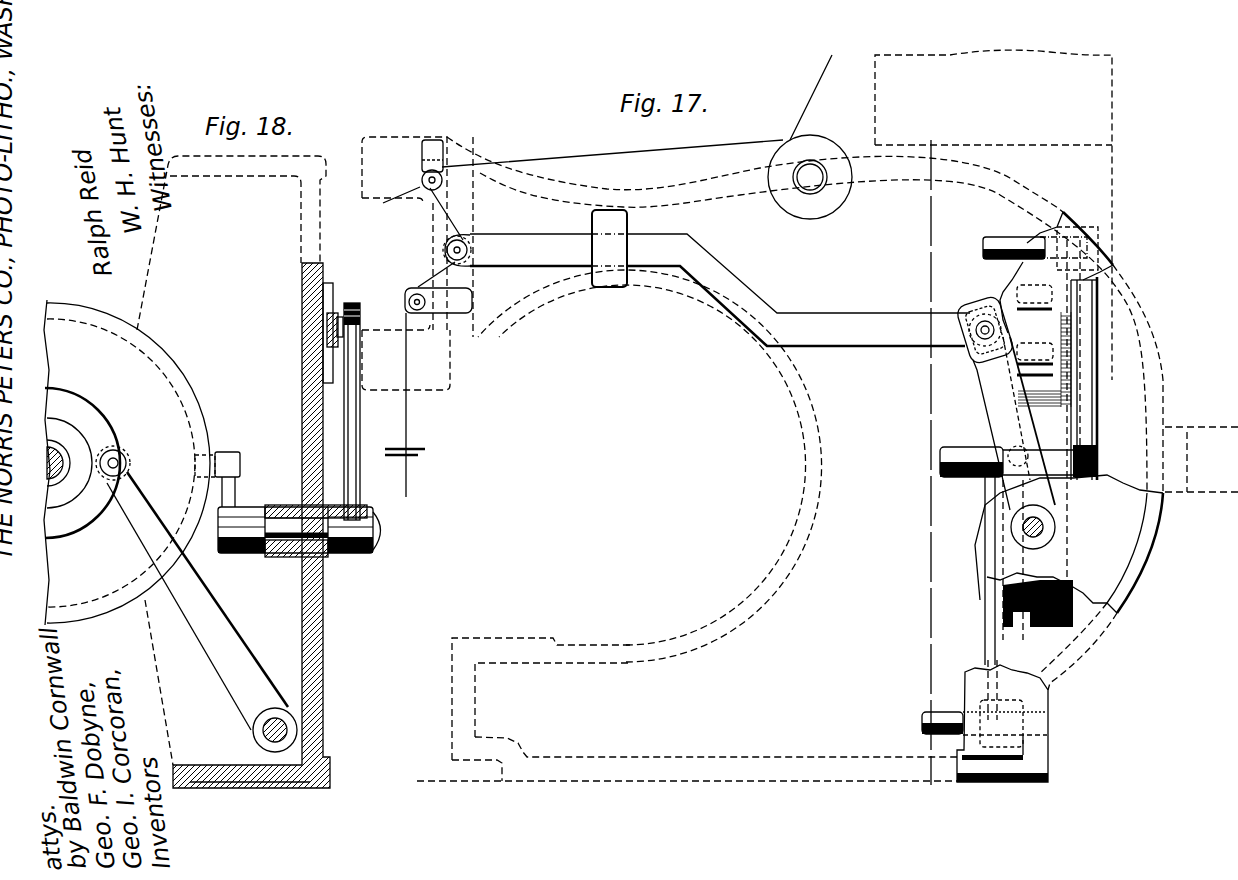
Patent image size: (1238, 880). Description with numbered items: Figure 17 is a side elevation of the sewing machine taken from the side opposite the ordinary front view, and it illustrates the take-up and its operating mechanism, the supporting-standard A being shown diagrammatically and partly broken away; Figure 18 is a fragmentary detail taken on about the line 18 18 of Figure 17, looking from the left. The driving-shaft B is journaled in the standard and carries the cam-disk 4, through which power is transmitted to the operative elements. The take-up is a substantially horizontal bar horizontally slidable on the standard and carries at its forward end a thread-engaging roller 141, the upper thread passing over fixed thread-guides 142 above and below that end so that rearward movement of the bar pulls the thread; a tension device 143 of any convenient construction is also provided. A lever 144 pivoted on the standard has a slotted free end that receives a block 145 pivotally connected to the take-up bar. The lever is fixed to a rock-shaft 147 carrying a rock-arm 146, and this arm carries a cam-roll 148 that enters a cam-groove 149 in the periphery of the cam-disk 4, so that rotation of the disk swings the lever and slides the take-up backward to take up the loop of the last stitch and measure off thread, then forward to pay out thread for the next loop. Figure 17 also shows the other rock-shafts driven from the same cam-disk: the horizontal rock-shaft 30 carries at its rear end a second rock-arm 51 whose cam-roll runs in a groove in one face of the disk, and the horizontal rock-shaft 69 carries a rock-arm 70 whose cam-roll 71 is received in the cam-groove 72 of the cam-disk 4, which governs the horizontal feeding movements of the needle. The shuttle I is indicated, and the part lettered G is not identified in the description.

In FIG. 18, the cam-disk 4 is at (127, 462).
In FIG. 17, the cam-disk 4 is at (1050, 627).
In FIG. 17, the section line 18 18 is at (927, 464).
In FIG. 17, the horizontal rock-shaft 30 is at (1010, 243).
In FIG. 17, the second rock-arm 51 is at (1098, 342).
In FIG. 18, the rock-shaft 69 is at (290, 730).
In FIG. 17, the rock-shaft 69 is at (938, 720).
In FIG. 18, the rock-arm 70 is at (222, 642).
In FIG. 17, the rock-arm 70 is at (990, 632).
In FIG. 18, the cam-roll 71 is at (124, 458).
In FIG. 18, the cam-groove 72 is at (65, 423).
In FIG. 17, the roller 141 is at (447, 248).
In FIG. 17, the fixed thread-guides 142 is at (420, 345).
In FIG. 17, the tension device 143 is at (825, 143).
In FIG. 17, the lever 144 is at (993, 397).
In FIG. 17, the block 145 is at (970, 317).
In FIG. 18, the rock-arm 146 is at (232, 491).
In FIG. 17, the rock-arm 146 is at (993, 495).
In FIG. 18, the rock-shaft 147 is at (367, 530).
In FIG. 17, the rock-shaft 147 is at (1047, 530).
In FIG. 18, the cam-roll 148 is at (214, 455).
In FIG. 17, the cam-roll 148 is at (990, 490).
In FIG. 18, the cam-groove 149 is at (173, 422).
In FIG. 17, the cam-groove 149 is at (1090, 402).
In FIG. 18, the supporting-standard A is at (327, 668).
In FIG. 17, the supporting-standard A is at (998, 773).
In FIG. 18, the driving-shaft B is at (106, 476).
In FIG. 17, the driving-shaft B is at (940, 458).
In FIG. 17, the guide G is at (425, 452).
In FIG. 17, the shuttle I is at (743, 287).